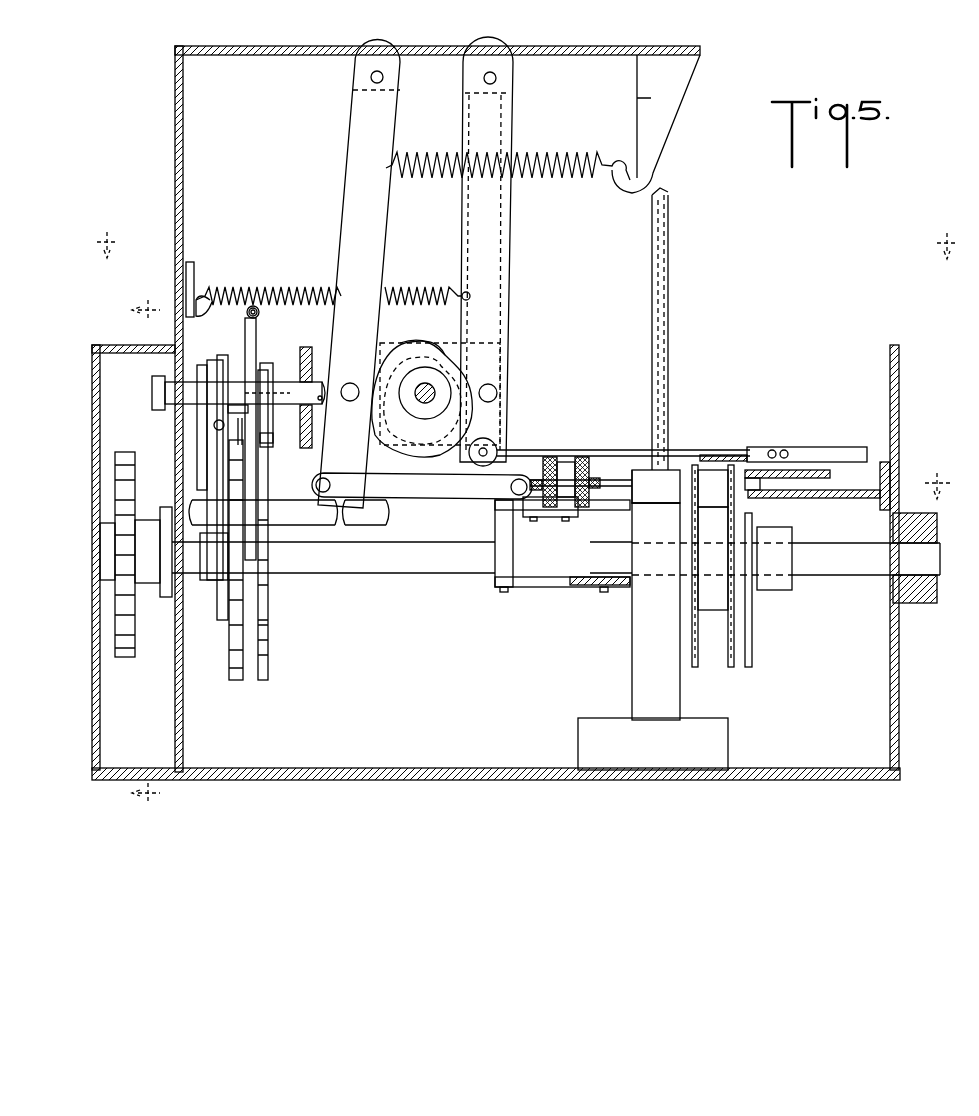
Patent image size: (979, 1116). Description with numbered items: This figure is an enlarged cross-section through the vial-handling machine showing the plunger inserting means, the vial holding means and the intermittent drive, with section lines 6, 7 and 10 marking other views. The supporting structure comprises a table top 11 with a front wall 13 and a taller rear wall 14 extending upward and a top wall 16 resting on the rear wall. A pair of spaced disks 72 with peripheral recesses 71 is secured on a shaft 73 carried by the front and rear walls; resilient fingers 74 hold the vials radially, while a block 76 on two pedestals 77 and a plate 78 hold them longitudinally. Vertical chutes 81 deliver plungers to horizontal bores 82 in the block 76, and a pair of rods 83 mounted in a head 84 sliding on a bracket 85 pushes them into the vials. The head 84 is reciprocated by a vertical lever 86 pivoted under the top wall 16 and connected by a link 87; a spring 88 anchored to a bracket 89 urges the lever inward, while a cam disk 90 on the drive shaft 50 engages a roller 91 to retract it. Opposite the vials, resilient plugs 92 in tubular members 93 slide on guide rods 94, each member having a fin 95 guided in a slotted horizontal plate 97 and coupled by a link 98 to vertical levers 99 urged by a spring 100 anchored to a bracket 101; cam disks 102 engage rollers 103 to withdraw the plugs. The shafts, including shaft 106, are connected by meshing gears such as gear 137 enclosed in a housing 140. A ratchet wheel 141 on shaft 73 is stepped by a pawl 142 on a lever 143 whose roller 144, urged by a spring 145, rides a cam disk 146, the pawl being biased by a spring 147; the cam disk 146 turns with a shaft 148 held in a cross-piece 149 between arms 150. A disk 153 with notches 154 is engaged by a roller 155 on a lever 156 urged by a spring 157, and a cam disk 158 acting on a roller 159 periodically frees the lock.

The section line 6- 6 is at (525, 237).
The section line 7- 7 is at (941, 478).
The section line 10- 10 is at (160, 545).
The table top 11 is at (390, 768).
The front wall 13 is at (899, 386).
The rear wall 14 is at (176, 136).
The top wall 16 is at (298, 47).
The drive shaft 50 is at (430, 393).
The recesses 71 is at (697, 650).
The disks 72 is at (730, 660).
The shaft 73 is at (852, 576).
The resilient fingers 74 is at (716, 456).
The block 76 is at (678, 470).
The pedestals 77 is at (632, 668).
The plate 78 is at (752, 628).
The vertical chutes 81 is at (670, 310).
The bores 82 is at (637, 470).
The rods 83 is at (614, 480).
The head 84 is at (566, 462).
The bracket 85 is at (608, 510).
The vertical lever 86 is at (345, 218).
The link 87 is at (432, 492).
The spring 88 is at (578, 175).
The bracket 89 is at (630, 99).
The cam disk 90 is at (440, 340).
The roller 91 is at (350, 401).
The plug 92 is at (760, 490).
The tubular members 93 is at (800, 480).
The guide rods 94 is at (848, 498).
The vertical fin 95 is at (818, 447).
The horizontal plate 97 is at (882, 510).
The link 98 is at (740, 455).
The vertical levers 99 is at (495, 226).
The spring 100 is at (268, 285).
The bracket 101 is at (200, 262).
The cam disks 102 is at (455, 352).
The rollers 103 is at (497, 393).
The shaft 106 is at (325, 518).
The gear 137 is at (128, 658).
The housing 140 is at (94, 492).
The ratchet wheel 141 is at (236, 680).
The pawl 142 is at (230, 410).
The lever 143 is at (215, 570).
The roller 144 is at (200, 372).
The spring 145 is at (236, 440).
The cam disk 146 is at (214, 428).
The spring 147 is at (238, 393).
The shaft 148 is at (322, 396).
The cross-piece 149 is at (310, 347).
The arms 150 is at (222, 358).
The disk 153 is at (270, 600).
The notches 154 is at (270, 630).
The roller 155 is at (273, 446).
The lever 156 is at (238, 313).
The spring 157 is at (259, 313).
The cam disk 158 is at (270, 372).
The roller 159 is at (257, 340).